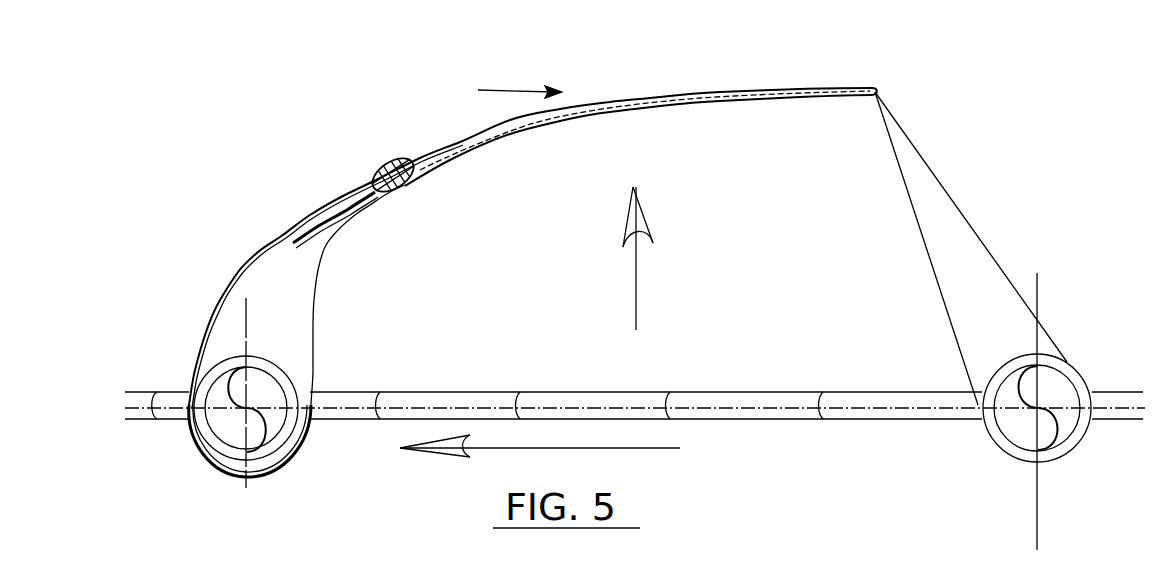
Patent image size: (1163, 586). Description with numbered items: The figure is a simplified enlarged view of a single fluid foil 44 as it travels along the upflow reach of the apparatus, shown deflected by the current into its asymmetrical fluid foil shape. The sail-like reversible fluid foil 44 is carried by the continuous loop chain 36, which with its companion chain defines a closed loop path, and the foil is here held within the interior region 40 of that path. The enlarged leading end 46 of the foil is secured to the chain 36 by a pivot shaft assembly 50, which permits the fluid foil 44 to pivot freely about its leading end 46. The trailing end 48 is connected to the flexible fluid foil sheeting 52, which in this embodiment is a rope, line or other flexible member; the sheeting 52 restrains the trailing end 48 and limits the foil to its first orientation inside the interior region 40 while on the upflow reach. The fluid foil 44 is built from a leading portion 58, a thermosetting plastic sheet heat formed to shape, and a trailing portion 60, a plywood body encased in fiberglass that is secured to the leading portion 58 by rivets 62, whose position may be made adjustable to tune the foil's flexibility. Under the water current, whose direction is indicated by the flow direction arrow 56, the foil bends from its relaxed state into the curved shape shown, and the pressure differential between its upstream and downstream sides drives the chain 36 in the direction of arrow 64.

The lower chain 36 is at (500, 381).
The interior region 40 is at (641, 180).
The fluid foil 44 is at (493, 90).
The leading end 46 is at (200, 452).
The trailing end 48 is at (843, 95).
The pivot shaft assembly 50 is at (230, 352).
The fluid foil sheeting 52 is at (975, 227).
The flow direction arrow 56 is at (638, 328).
The leading portion 58 is at (258, 260).
The trailing portion 60 is at (625, 100).
The rivets 62 is at (405, 192).
The chain movement arrow 64 is at (625, 448).